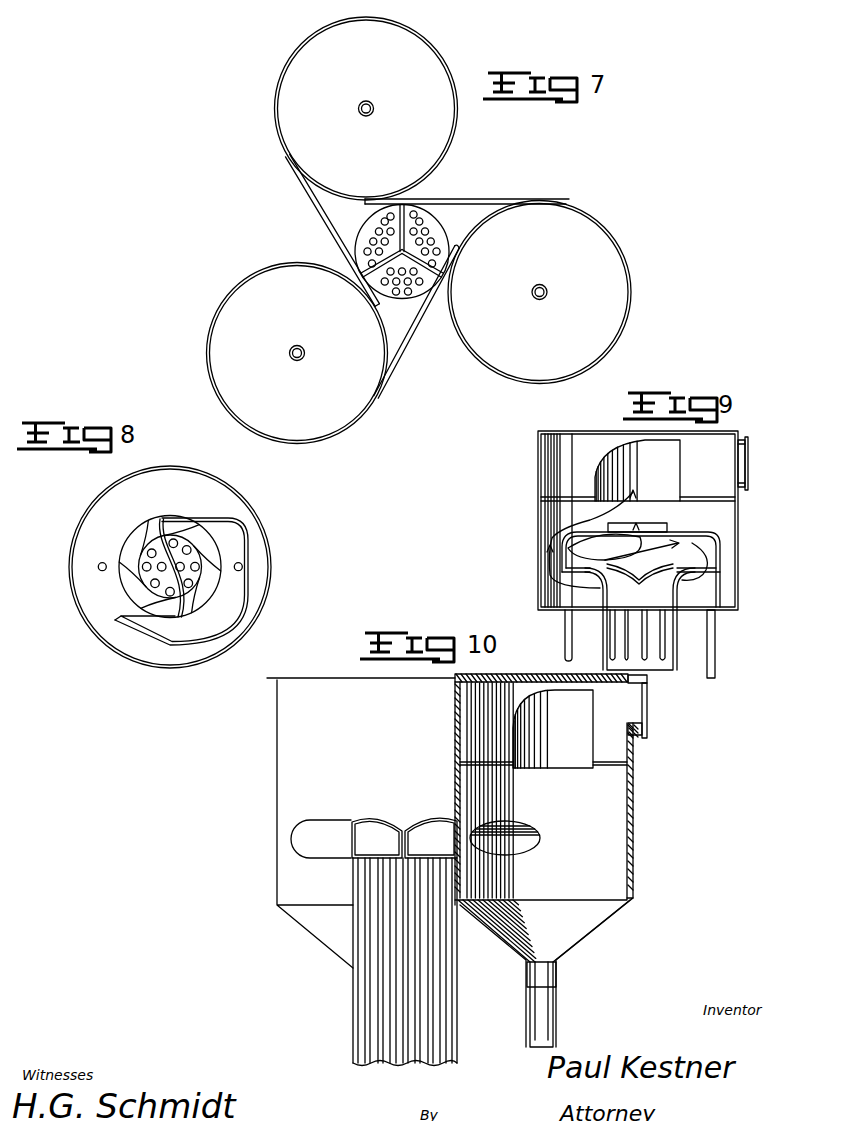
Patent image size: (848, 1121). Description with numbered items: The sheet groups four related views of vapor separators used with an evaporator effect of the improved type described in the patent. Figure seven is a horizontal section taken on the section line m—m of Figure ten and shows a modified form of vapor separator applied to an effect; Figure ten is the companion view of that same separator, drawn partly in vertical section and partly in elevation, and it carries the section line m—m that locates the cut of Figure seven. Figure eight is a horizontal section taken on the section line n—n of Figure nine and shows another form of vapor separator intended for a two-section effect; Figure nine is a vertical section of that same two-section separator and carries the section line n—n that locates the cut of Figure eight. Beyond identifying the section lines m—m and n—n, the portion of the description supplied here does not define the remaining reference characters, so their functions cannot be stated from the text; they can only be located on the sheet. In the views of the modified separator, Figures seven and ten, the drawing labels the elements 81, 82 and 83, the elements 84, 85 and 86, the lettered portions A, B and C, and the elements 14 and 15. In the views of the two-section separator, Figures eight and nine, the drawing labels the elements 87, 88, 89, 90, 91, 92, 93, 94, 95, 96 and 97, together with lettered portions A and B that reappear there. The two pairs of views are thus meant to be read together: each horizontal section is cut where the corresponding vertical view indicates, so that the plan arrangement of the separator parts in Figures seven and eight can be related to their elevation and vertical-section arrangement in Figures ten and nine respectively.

In FIG. 7, the pipe connecting drum 84 to drum 86 81 is at (322, 203).
In FIG. 10, the pipe connecting drum 84 to drum 86 81 is at (290, 838).
In FIG. 7, the pipe connecting drum 84 to drum 85 82 is at (492, 208).
In FIG. 10, the pipe connecting drum 84 to drum 85 82 is at (545, 839).
In FIG. 7, the pipe connecting drum 85 to drum 86 83 is at (393, 358).
In FIG. 7, the first drum vessel 84 is at (366, 108).
In FIG. 10, the first drum vessel 84 is at (368, 824).
In FIG. 7, the second drum vessel 85 is at (539, 292).
In FIG. 10, the second drum vessel 85 is at (633, 808).
In FIG. 7, the third drum vessel 86 is at (297, 353).
In FIG. 7, the compartment A of tubular distributor A is at (357, 240).
In FIG. 9, the compartment A of tubular distributor A is at (628, 640).
In FIG. 10, the compartment A of tubular distributor A is at (400, 838).
In FIG. 7, the compartment B of tubular distributor B is at (427, 213).
In FIG. 9, the compartment B of tubular distributor B is at (650, 642).
In FIG. 10, the compartment B of tubular distributor B is at (455, 838).
In FIG. 7, the compartment C of tubular distributor C is at (413, 297).
In FIG. 8, the impeller 90 is at (215, 552).
In FIG. 8, the pipe 91 is at (98, 568).
In FIG. 9, the pipe 91 is at (565, 628).
In FIG. 8, the pipe 94 is at (243, 566).
In FIG. 9, the pipe 94 is at (715, 655).
In FIG. 8, the casing wall 96 is at (245, 597).
In FIG. 9, the casing wall 96 is at (755, 548).
In FIG. 9, the outer casing 87 is at (738, 523).
In FIG. 9, the cover 92 is at (703, 532).
In FIG. 9, the opening 93 is at (648, 522).
In FIG. 9, the flow passage 95 is at (642, 555).
In FIG. 9, the bottom wall 97 is at (722, 575).
In FIG. 9, the discharge outlet 88 is at (640, 617).
In FIG. 9, the outlet wall 89 is at (680, 585).
In FIG. 10, the duct 14 is at (585, 713).
In FIG. 10, the flange 15 is at (644, 713).
In FIG. 9, the section line n— n is at (604, 587).
In FIG. 10, the section line m— m is at (342, 838).